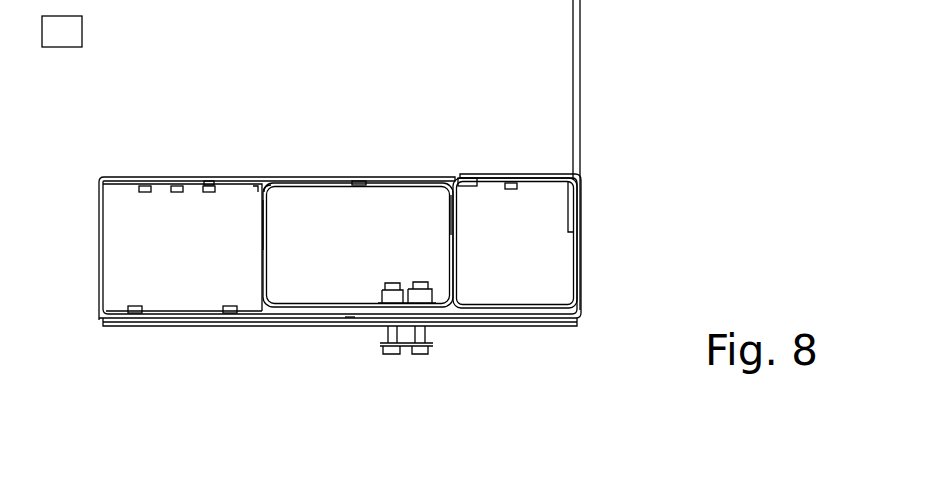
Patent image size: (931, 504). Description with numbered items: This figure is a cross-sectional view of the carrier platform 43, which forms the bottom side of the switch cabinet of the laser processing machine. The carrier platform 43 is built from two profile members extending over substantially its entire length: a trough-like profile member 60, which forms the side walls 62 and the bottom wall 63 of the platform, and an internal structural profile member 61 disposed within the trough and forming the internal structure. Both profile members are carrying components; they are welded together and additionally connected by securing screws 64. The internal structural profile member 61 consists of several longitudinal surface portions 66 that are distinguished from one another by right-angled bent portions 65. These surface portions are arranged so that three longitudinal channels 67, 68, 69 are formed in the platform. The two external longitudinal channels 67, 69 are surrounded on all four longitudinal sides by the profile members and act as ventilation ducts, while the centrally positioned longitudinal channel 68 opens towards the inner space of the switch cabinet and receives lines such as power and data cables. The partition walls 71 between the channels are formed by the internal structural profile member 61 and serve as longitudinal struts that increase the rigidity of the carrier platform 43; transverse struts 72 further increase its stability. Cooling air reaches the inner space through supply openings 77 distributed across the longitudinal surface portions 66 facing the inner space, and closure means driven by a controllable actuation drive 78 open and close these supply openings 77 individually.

The carrier platform 43 is at (602, 160).
The trough-like profile member 60 is at (340, 238).
The internal structural profile member 61 is at (247, 298).
The side walls 62 is at (100, 258).
The bottom wall 63 is at (317, 316).
The securing screws 64 is at (397, 347).
The right-angled bent portions 65 is at (267, 182).
The longitudinal surface portions 66 is at (255, 185).
The longitudinal channel 67 is at (189, 268).
The longitudinal channel 68 is at (324, 229).
The longitudinal channel 69 is at (530, 281).
The partition walls 71 is at (263, 227).
The transverse struts 72 is at (392, 182).
The supply openings 77 is at (163, 183).
The controllable actuation drive 78 is at (75, 44).